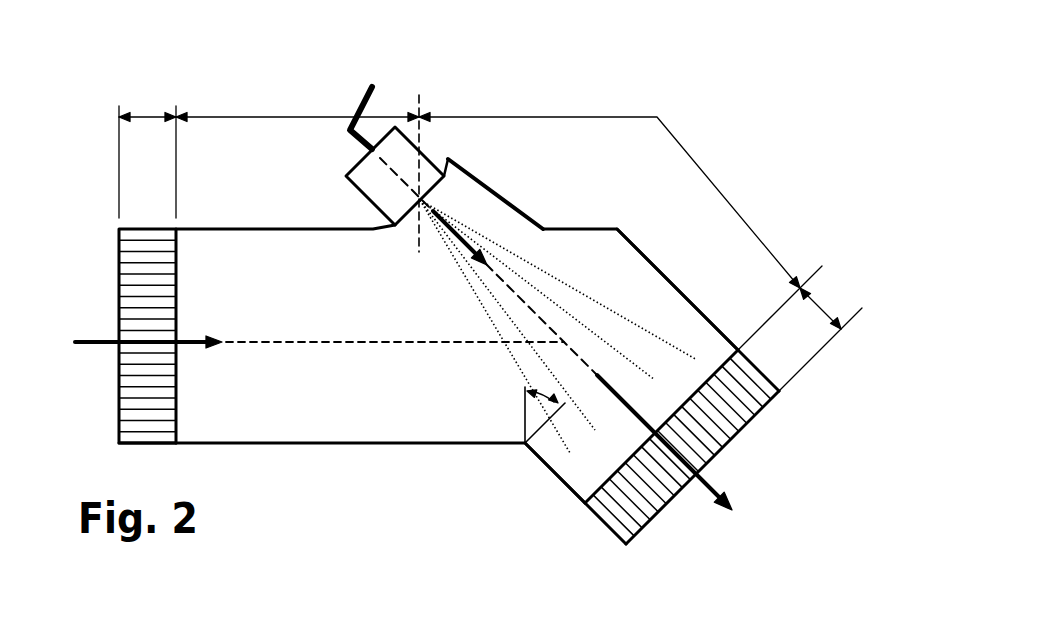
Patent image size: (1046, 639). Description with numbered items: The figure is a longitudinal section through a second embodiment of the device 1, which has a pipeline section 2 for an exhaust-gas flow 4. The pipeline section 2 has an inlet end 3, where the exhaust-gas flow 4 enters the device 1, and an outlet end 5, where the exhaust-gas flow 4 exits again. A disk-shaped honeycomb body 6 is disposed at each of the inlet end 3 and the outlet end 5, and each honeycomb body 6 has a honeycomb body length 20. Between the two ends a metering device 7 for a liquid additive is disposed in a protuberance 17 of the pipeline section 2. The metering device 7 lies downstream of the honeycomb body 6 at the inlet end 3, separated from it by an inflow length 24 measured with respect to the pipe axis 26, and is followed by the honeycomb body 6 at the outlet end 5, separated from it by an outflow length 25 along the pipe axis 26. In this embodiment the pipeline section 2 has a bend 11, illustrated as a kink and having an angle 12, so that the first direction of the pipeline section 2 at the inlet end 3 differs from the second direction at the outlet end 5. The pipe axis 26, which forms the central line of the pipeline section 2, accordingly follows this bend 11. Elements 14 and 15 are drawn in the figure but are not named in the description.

The device 1 is at (101, 174).
The pipeline section 2 is at (418, 445).
The inlet end 3 is at (117, 447).
The exhaust-gas flow 4 is at (95, 340).
The outlet end 5 is at (620, 547).
The disk-shaped honeycomb body 6 is at (150, 253).
The metering device 7 is at (430, 162).
The bend 11 is at (578, 262).
The angle 12 is at (537, 415).
The radiation beam 14 is at (508, 287).
The reflector 15 is at (448, 192).
The protuberance 17 is at (455, 230).
The honeycomb body length 20 is at (150, 113).
The inflow length 24 is at (265, 117).
The outflow length 25 is at (728, 193).
The pipe axis 26 is at (322, 344).